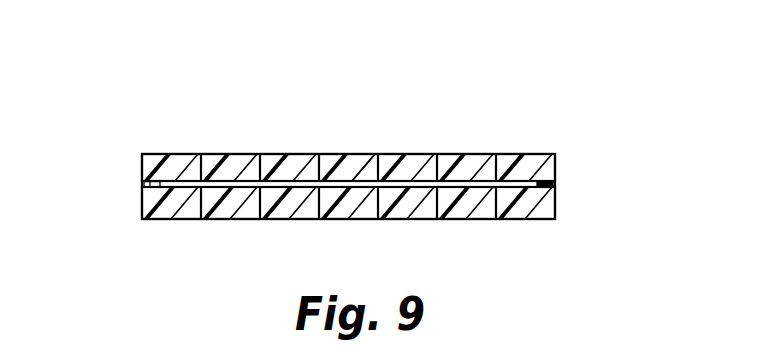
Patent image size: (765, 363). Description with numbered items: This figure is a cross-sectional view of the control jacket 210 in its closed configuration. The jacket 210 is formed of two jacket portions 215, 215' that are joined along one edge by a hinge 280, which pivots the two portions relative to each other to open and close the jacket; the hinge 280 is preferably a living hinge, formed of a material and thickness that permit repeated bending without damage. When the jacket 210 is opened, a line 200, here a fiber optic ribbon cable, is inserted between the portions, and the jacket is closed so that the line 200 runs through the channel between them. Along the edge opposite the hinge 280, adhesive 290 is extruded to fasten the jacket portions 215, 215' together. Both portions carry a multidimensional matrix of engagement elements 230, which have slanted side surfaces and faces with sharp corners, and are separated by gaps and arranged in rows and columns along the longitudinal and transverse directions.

The jacket 210 is at (155, 82).
The jacket portion 215 is at (348, 125).
The jacket portion 215' is at (348, 246).
The engagement elements 230 is at (387, 153).
The line 200 is at (522, 160).
The hinge 280 is at (143, 183).
The adhesive 290 is at (555, 183).